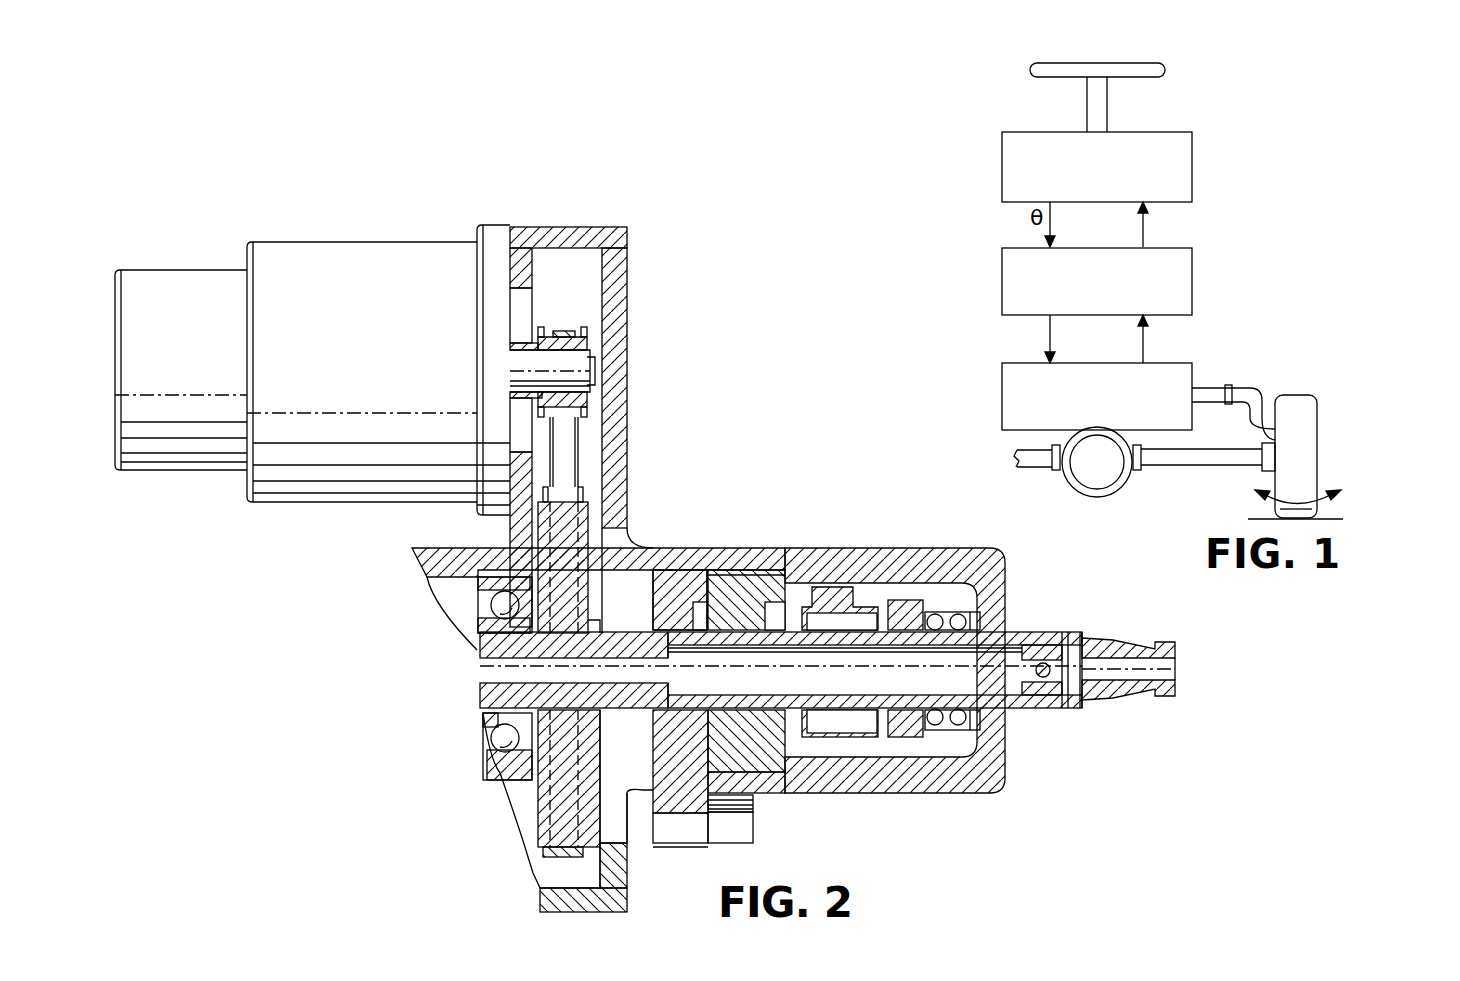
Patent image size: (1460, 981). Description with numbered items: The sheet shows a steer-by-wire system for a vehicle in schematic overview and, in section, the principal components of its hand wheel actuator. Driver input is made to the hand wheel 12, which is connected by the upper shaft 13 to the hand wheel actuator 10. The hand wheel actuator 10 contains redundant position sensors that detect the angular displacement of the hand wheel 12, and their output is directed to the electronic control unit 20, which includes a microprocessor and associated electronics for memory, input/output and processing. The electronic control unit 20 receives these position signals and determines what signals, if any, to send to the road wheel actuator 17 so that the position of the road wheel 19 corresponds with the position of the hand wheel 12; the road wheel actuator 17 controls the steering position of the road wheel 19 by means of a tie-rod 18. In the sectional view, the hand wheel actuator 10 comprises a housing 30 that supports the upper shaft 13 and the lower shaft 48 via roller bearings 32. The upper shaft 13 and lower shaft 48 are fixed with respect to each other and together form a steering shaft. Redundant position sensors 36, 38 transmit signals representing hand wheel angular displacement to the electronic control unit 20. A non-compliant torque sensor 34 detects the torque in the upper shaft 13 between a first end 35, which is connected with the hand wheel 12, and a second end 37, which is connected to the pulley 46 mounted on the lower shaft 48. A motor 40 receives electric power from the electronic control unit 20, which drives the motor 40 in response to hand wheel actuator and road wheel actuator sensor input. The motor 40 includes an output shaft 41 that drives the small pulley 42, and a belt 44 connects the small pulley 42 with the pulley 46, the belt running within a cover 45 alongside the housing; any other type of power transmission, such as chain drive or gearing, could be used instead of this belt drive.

In FIG. 1, the hand wheel actuator 10 is at (1192, 170).
In FIG. 2, the hand wheel actuator 10 is at (776, 434).
In FIG. 1, the hand wheel 12 is at (1165, 69).
In FIG. 1, the upper shaft 13 is at (1107, 110).
In FIG. 2, the upper shaft 13 is at (1032, 632).
In FIG. 1, the road wheel actuator 17 is at (1192, 372).
In FIG. 1, the tie-rod 18 is at (1253, 398).
In FIG. 1, the road wheel 19 is at (1317, 420).
In FIG. 1, the electronic control unit 20 is at (1192, 275).
In FIG. 2, the housing 30 is at (893, 793).
In FIG. 2, the roller bearings 32 is at (483, 592).
In FIG. 2, the non-compliant torque sensor 34 is at (837, 623).
In FIG. 2, the first end 35 is at (1177, 648).
In FIG. 2, the position sensor 36 is at (752, 580).
In FIG. 2, the second end 37 is at (621, 630).
In FIG. 2, the position sensor 38 is at (686, 580).
In FIG. 2, the motor 40 is at (377, 262).
In FIG. 2, the output shaft 41 is at (583, 362).
In FIG. 2, the small pulley 42 is at (580, 345).
In FIG. 2, the belt 44 is at (570, 477).
In FIG. 2, the pulley housing 45 is at (636, 425).
In FIG. 2, the pulley 46 is at (570, 552).
In FIG. 2, the lower shaft 48 is at (487, 722).